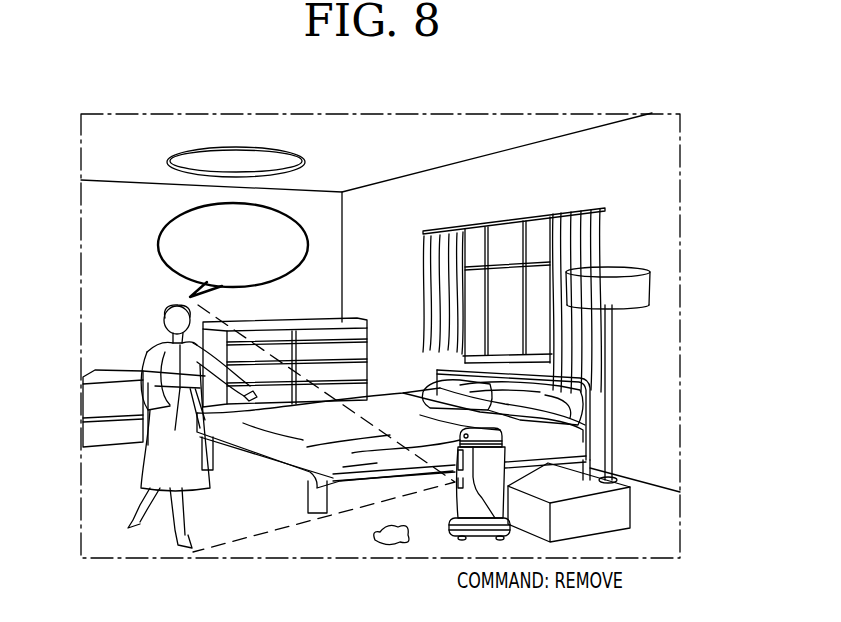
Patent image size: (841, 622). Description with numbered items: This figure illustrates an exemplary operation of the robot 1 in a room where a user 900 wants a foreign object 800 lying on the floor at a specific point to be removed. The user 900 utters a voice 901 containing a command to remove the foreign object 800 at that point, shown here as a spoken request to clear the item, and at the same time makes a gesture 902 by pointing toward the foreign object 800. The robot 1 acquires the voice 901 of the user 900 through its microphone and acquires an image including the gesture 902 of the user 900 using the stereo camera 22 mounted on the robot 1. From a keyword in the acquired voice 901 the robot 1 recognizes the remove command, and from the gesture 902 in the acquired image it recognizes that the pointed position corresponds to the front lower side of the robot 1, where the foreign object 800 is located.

The robot 1 is at (497, 477).
The stereo camera 22 is at (455, 483).
The foreign object 800 is at (391, 547).
The user 900 is at (152, 457).
The voice 901 is at (223, 203).
The gesture 902 is at (253, 397).